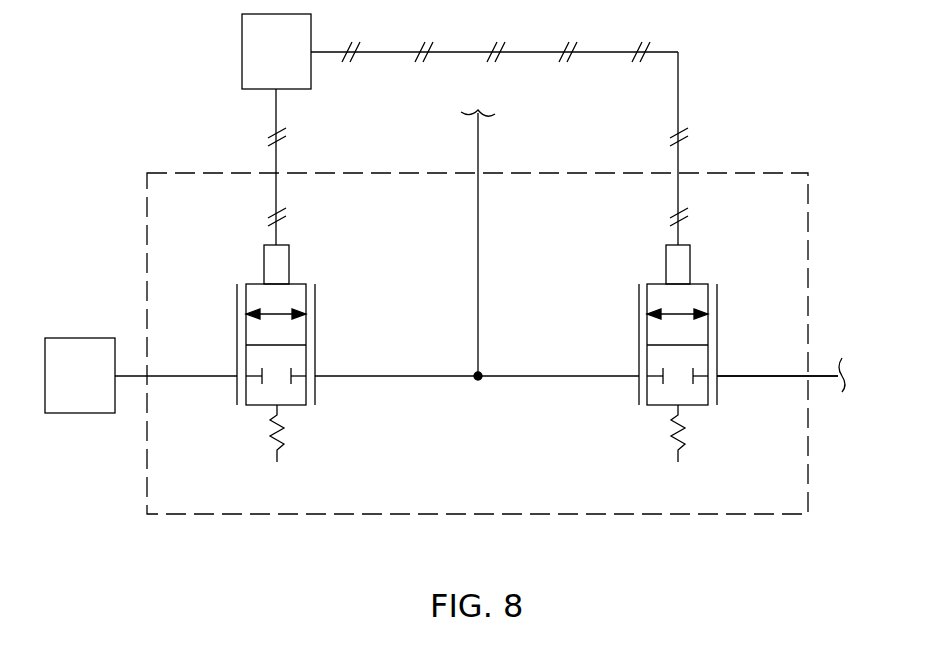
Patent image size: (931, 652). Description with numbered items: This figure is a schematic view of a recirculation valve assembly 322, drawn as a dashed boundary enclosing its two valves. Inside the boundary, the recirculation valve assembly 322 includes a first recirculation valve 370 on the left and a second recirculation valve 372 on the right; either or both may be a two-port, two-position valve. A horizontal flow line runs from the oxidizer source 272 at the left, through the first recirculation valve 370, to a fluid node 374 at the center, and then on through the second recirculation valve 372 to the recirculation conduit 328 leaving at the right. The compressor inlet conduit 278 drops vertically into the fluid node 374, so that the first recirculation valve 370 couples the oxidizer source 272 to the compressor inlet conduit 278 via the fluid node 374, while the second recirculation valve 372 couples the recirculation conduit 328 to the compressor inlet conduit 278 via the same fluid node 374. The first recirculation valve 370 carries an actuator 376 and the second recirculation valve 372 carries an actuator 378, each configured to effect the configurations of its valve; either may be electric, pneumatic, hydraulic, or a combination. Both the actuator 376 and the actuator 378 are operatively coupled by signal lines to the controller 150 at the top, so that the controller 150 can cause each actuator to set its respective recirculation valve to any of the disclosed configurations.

The controller 150 is at (290, 58).
The oxidizer source 272 is at (66, 383).
The compressor inlet conduit 278 is at (478, 146).
The recirculation valve assembly 322 is at (565, 516).
The recirculation conduit 328 is at (761, 378).
The first recirculation valve 370 is at (227, 347).
The second recirculation valve 372 is at (732, 347).
The fluid node 374 is at (475, 380).
The actuator 376 is at (289, 268).
The actuator 378 is at (665, 262).